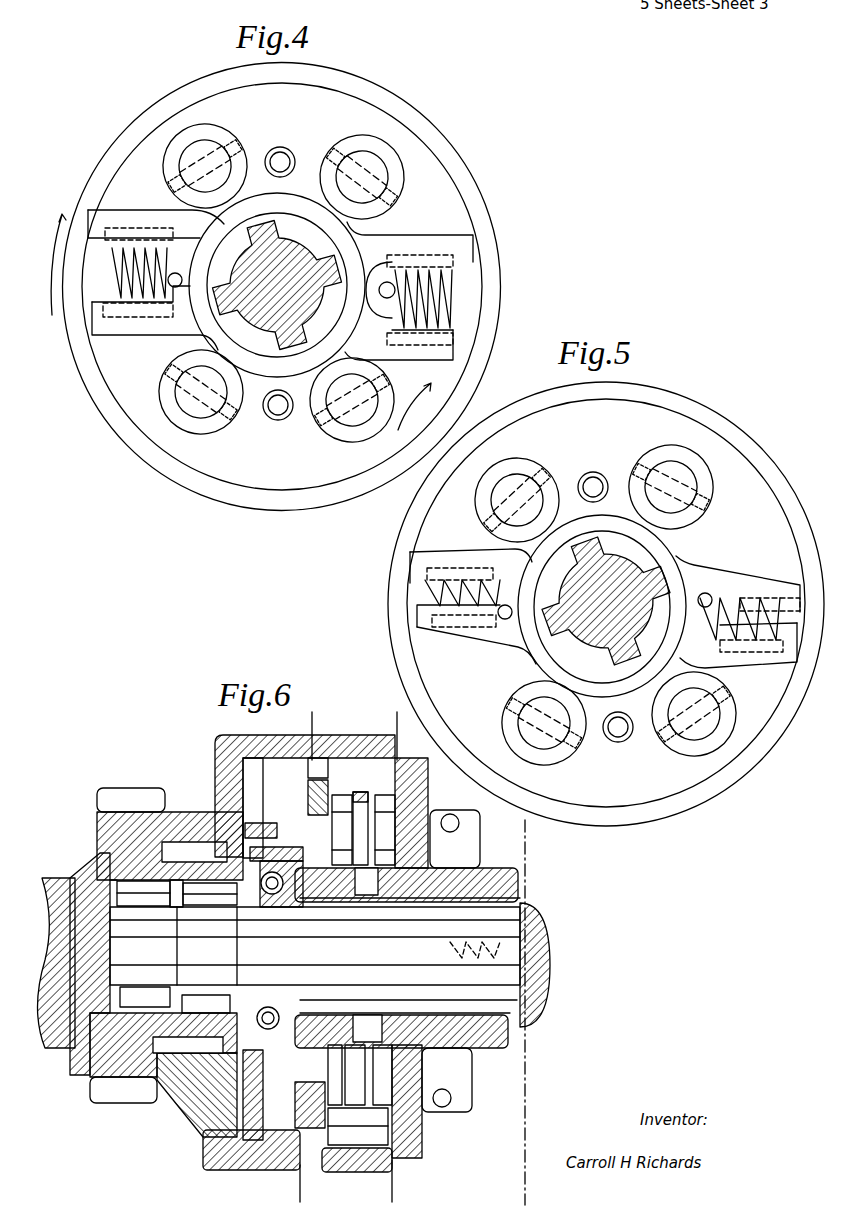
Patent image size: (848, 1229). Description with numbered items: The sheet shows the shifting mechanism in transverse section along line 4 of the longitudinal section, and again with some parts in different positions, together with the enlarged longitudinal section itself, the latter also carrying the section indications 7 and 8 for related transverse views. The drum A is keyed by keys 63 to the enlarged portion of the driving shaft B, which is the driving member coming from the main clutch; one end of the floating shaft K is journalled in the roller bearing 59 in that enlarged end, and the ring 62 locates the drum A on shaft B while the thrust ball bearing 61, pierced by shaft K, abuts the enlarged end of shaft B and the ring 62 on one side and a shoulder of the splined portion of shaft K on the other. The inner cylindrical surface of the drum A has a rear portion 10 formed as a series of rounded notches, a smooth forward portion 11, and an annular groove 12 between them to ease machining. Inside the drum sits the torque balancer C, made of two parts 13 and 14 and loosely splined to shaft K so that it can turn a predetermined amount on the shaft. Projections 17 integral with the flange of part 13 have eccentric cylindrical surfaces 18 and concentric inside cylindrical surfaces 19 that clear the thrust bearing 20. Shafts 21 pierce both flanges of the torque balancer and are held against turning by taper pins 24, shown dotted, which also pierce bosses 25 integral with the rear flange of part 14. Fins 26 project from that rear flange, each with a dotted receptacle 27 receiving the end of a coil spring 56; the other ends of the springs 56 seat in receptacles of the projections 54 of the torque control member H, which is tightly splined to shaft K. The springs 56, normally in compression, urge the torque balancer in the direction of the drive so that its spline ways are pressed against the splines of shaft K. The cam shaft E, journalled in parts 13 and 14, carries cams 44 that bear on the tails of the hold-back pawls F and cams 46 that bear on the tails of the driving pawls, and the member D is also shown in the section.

In FIG. 4, the part of torque balancer 14 is at (349, 113).
In FIG. 5, the part of torque balancer 14 is at (657, 423).
In FIG. 6, the part of torque balancer 14 is at (388, 812).
In FIG. 4, the shafts 21 is at (196, 150).
In FIG. 5, the shafts 21 is at (500, 497).
In FIG. 4, the taper pins 24 is at (218, 150).
In FIG. 5, the taper pins 24 is at (554, 480).
In FIG. 6, the taper pins 24 is at (455, 828).
In FIG. 4, the bosses 25 is at (250, 168).
In FIG. 5, the bosses 25 is at (513, 467).
In FIG. 6, the bosses 25 is at (465, 855).
In FIG. 4, the fins 26 is at (132, 210).
In FIG. 5, the fins 26 is at (470, 553).
In FIG. 4, the receptacle 27 is at (110, 212).
In FIG. 5, the receptacle 27 is at (427, 572).
In FIG. 4, the projections 54 is at (130, 326).
In FIG. 5, the projections 54 is at (440, 622).
In FIG. 4, the torque balancer springs 56 is at (122, 253).
In FIG. 5, the torque balancer springs 56 is at (452, 594).
In FIG. 6, the torque balancer springs 56 is at (545, 985).
In FIG. 4, the drum A is at (349, 80).
In FIG. 5, the drum A is at (706, 414).
In FIG. 6, the drum A is at (228, 748).
In FIG. 4, the torque balancer C is at (148, 150).
In FIG. 5, the torque balancer C is at (443, 532).
In FIG. 6, the torque balancer C is at (440, 825).
In FIG. 4, the torque control member H is at (392, 237).
In FIG. 5, the torque control member H is at (712, 575).
In FIG. 6, the torque control member H is at (406, 958).
In FIG. 4, the floating shaft K is at (282, 290).
In FIG. 5, the floating shaft K is at (600, 600).
In FIG. 6, the floating shaft K is at (525, 922).
In FIG. 6, the driving shaft B is at (60, 880).
In FIG. 6, the plate D is at (250, 822).
In FIG. 6, the cam shaft E is at (262, 740).
In FIG. 6, the hold-back pawls F is at (385, 800).
In FIG. 6, the line 4— 4 is at (516, 827).
In FIG. 6, the Fig. 7 section 7 is at (388, 718).
In FIG. 6, the Fig. 8 section 8 is at (302, 718).
In FIG. 6, the rear portion of inner cylindrical surface / notches 10 is at (345, 1120).
In FIG. 6, the forward portion of inner cylindrical surface 11 is at (225, 1165).
In FIG. 6, the annular groove 12 is at (312, 1150).
In FIG. 6, the part of torque balancer 13 is at (320, 770).
In FIG. 6, the projections 17 is at (215, 820).
In FIG. 6, the cylindrical surfaces 18 is at (232, 830).
In FIG. 6, the inside cylindrical surfaces 19 is at (165, 816).
In FIG. 6, the thrust bearing 20 is at (268, 895).
In FIG. 6, the cams 44 is at (402, 790).
In FIG. 6, the cams 46 is at (392, 812).
In FIG. 6, the roller bearing 59 is at (92, 1015).
In FIG. 6, the thrust ball bearing 61 is at (258, 1012).
In FIG. 6, the ring 62 is at (225, 1045).
In FIG. 6, the keys 63 is at (165, 852).